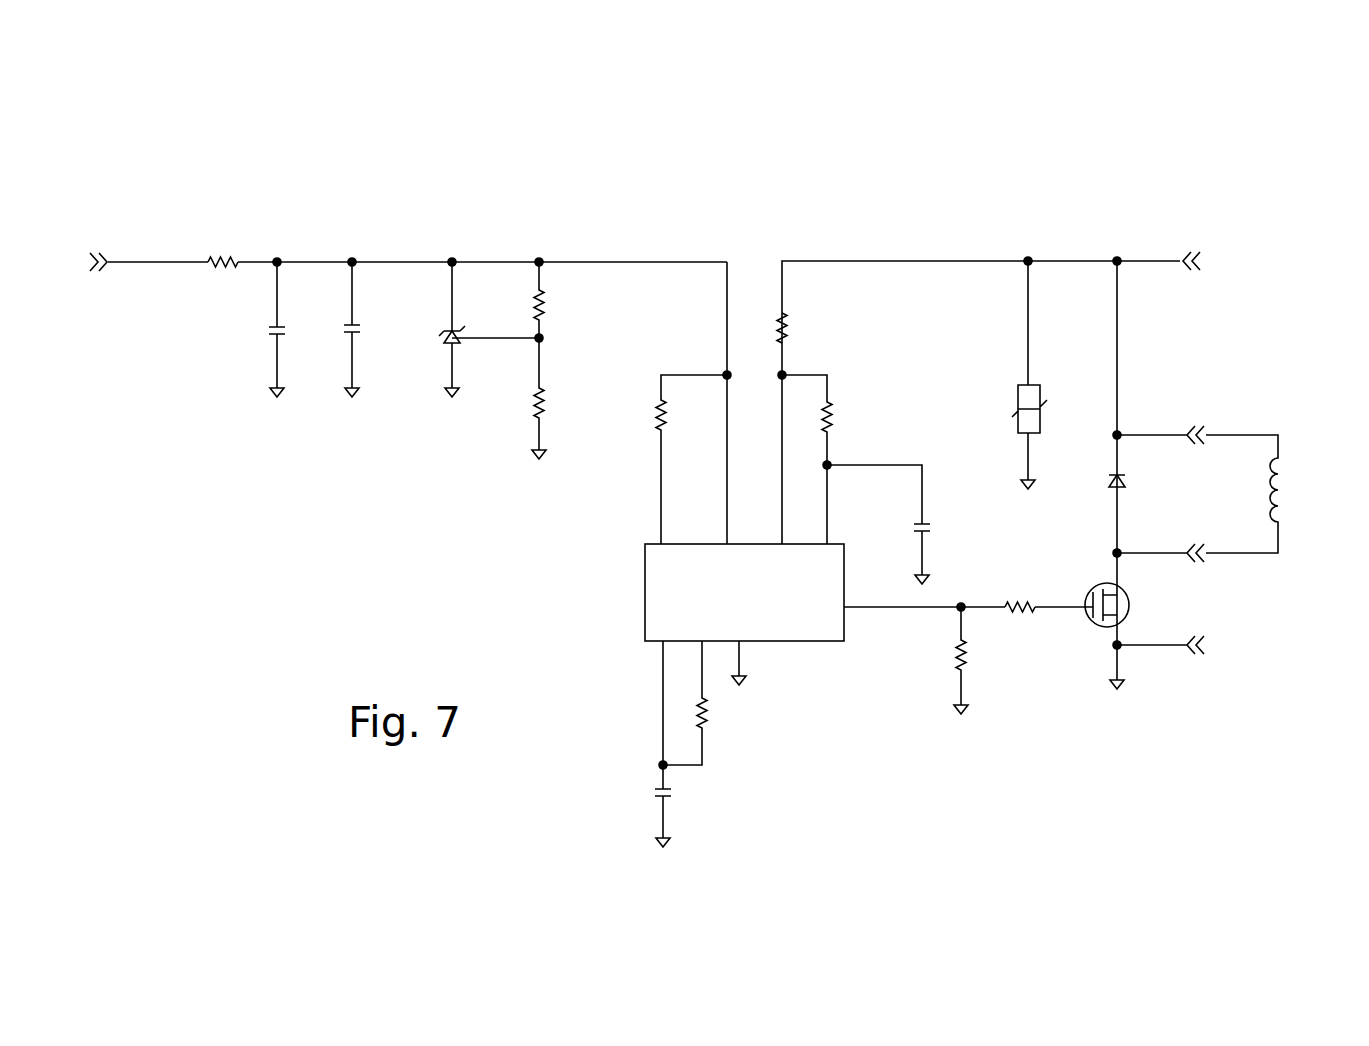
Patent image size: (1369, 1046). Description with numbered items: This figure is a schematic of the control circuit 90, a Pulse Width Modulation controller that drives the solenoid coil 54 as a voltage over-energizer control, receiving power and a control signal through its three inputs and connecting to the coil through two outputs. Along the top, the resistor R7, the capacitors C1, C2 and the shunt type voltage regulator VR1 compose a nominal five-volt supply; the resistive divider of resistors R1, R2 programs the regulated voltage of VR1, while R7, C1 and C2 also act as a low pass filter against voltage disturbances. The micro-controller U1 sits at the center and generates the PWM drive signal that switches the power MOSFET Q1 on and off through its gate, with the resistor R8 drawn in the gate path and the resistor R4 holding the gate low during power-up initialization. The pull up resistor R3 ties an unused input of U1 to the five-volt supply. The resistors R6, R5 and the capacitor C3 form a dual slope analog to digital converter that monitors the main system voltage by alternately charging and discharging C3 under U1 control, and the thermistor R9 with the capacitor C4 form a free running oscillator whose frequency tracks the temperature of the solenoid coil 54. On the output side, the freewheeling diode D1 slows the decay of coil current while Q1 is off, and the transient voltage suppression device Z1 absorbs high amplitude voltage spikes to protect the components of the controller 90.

The control circuit 90 is at (410, 186).
The solenoid coil 54 is at (1289, 482).
The resistor R7 is at (223, 249).
The capacitor C1 is at (262, 327).
The capacitor C2 is at (336, 327).
The voltage regulator VR1 is at (469, 327).
The resistor R1 is at (521, 300).
The resistor R2 is at (522, 398).
The pull up resistor R3 is at (673, 459).
The resistor R6 is at (802, 328).
The resistor R5 is at (827, 459).
The capacitor C3 is at (878, 524).
The micro-controller U1 is at (754, 590).
The thermistor R9 is at (705, 703).
The capacitor C4 is at (646, 804).
The resistor R4 is at (944, 660).
The resistor R8 is at (1020, 591).
The power MOSFET Q1 is at (1124, 599).
The freewheeling diode D1 is at (1136, 481).
The transient voltage suppression device Z1 is at (1043, 373).